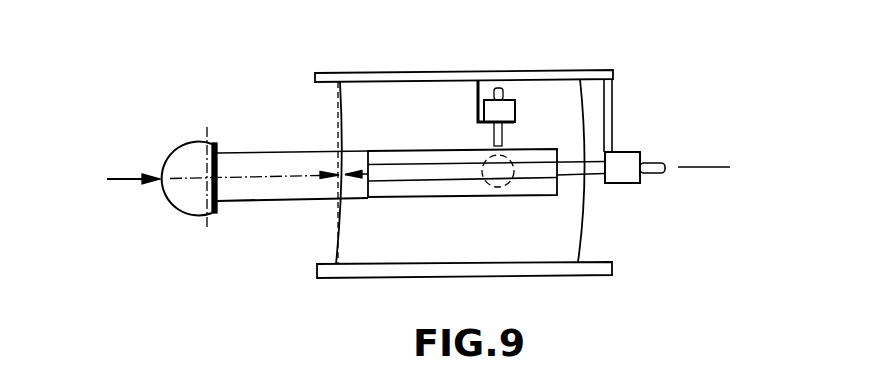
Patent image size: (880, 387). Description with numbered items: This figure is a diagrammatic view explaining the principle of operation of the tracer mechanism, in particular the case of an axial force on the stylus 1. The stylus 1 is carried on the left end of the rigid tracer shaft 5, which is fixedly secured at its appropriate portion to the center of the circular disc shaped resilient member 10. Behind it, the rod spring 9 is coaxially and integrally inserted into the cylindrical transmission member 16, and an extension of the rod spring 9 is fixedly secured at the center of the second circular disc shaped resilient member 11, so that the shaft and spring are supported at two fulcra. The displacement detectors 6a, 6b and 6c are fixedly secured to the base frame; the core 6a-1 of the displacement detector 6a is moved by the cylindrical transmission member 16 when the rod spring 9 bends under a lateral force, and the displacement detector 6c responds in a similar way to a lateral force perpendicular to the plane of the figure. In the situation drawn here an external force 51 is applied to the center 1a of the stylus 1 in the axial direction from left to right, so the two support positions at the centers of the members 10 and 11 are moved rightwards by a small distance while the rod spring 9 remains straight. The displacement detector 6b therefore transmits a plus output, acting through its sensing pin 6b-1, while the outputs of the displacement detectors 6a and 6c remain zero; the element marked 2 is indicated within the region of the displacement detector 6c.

The stylus 1 is at (182, 153).
The center of the stylus 1a is at (206, 180).
The tracer shaft 5 is at (282, 153).
The external force 51 is at (111, 167).
The circular disc shaped resilient member 10 is at (341, 131).
The circular disc shaped resilient member 11 is at (581, 233).
The cylindrical transmission member 16 is at (433, 198).
The rod spring 9 is at (568, 180).
The displacement detector 6a is at (502, 117).
The core 6a-1 is at (500, 88).
The displacement detector 6b is at (625, 152).
The sensor pin 6b-1 is at (651, 160).
The displacement detector 6c is at (511, 196).
The element 2 is at (498, 172).